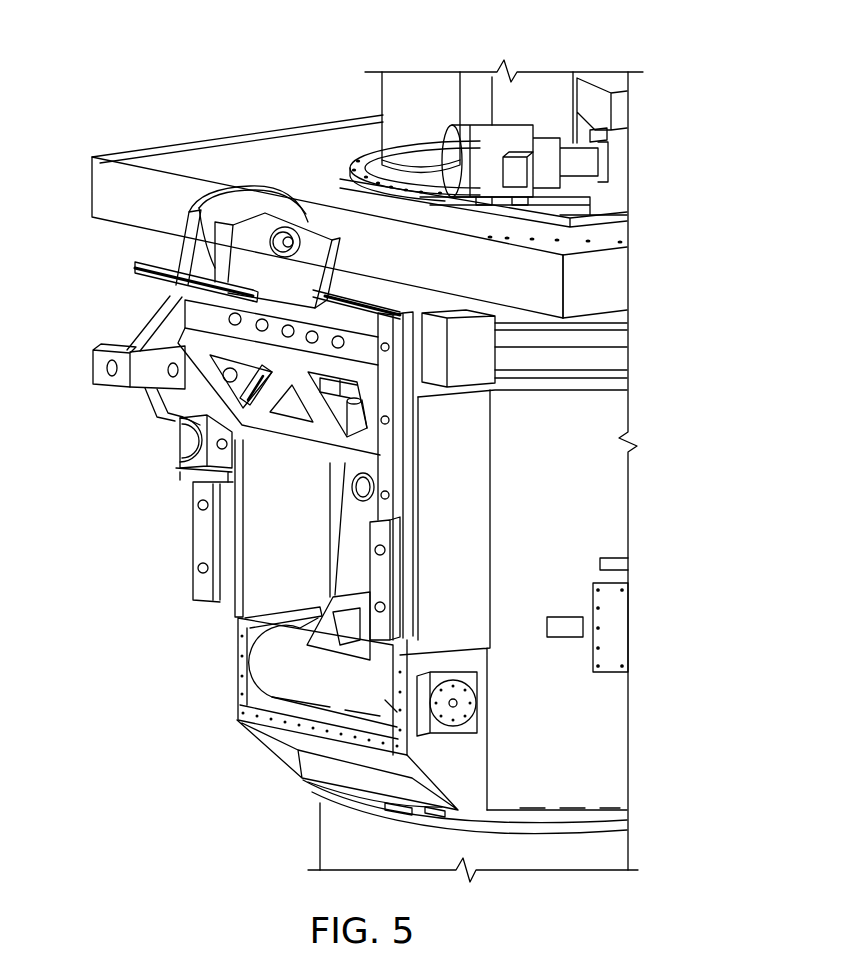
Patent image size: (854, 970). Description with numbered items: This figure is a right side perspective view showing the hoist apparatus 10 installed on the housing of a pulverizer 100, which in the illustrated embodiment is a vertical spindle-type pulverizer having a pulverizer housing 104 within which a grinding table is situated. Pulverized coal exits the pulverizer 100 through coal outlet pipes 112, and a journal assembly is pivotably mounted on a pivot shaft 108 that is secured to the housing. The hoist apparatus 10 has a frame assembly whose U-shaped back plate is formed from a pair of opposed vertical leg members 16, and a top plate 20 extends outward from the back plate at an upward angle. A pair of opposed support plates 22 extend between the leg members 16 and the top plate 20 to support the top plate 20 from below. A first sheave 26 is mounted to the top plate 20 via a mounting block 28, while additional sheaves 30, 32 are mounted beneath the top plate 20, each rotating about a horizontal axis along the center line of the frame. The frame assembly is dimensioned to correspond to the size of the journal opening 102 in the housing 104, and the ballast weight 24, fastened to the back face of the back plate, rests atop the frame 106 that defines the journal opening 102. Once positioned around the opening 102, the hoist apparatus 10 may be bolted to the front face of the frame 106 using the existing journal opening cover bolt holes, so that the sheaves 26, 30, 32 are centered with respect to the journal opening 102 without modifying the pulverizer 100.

The hoist apparatus 10 is at (111, 266).
The leg members 16 is at (202, 570).
The top plate 20 is at (134, 284).
The support plates 22 is at (267, 430).
The ballast weight 24 is at (497, 357).
The first sheave 26 is at (254, 188).
The mounting block 28 is at (312, 250).
The sheave 30 is at (143, 390).
The sheave 32 is at (178, 454).
The pulverizer 100 is at (549, 59).
The journal opening 102 is at (277, 570).
The pulverizer housing 104 is at (590, 499).
The frame 106 is at (450, 638).
The pivot shaft 108 is at (283, 678).
The coal outlet pipes 112 is at (410, 90).